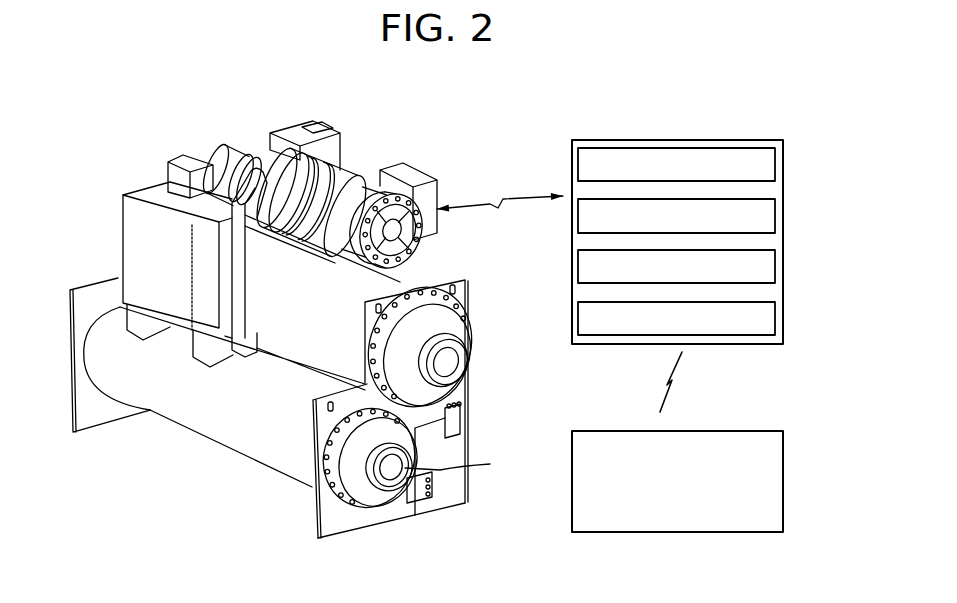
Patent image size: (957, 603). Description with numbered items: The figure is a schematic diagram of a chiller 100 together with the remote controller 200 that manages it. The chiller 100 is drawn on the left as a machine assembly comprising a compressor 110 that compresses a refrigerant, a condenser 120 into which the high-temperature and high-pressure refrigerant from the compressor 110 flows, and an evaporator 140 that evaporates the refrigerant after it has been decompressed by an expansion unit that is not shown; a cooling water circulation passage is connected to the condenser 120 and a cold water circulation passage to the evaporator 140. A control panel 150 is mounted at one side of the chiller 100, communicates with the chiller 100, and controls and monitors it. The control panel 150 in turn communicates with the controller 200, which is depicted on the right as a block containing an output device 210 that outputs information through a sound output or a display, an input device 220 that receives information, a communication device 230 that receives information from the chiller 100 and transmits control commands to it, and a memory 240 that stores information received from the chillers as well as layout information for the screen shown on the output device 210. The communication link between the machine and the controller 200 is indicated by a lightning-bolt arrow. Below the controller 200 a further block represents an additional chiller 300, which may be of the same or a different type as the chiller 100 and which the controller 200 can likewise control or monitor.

The chiller 100 is at (212, 132).
The compressor 110 is at (360, 160).
The condenser 120 is at (405, 276).
The evaporator 140 is at (222, 458).
The control panel 150 is at (434, 186).
The controller 200 is at (676, 140).
The output device 210 is at (775, 166).
The input device 220 is at (775, 217).
The communication device 230 is at (775, 269).
The memory 240 is at (775, 320).
The additional chiller 300 is at (783, 483).